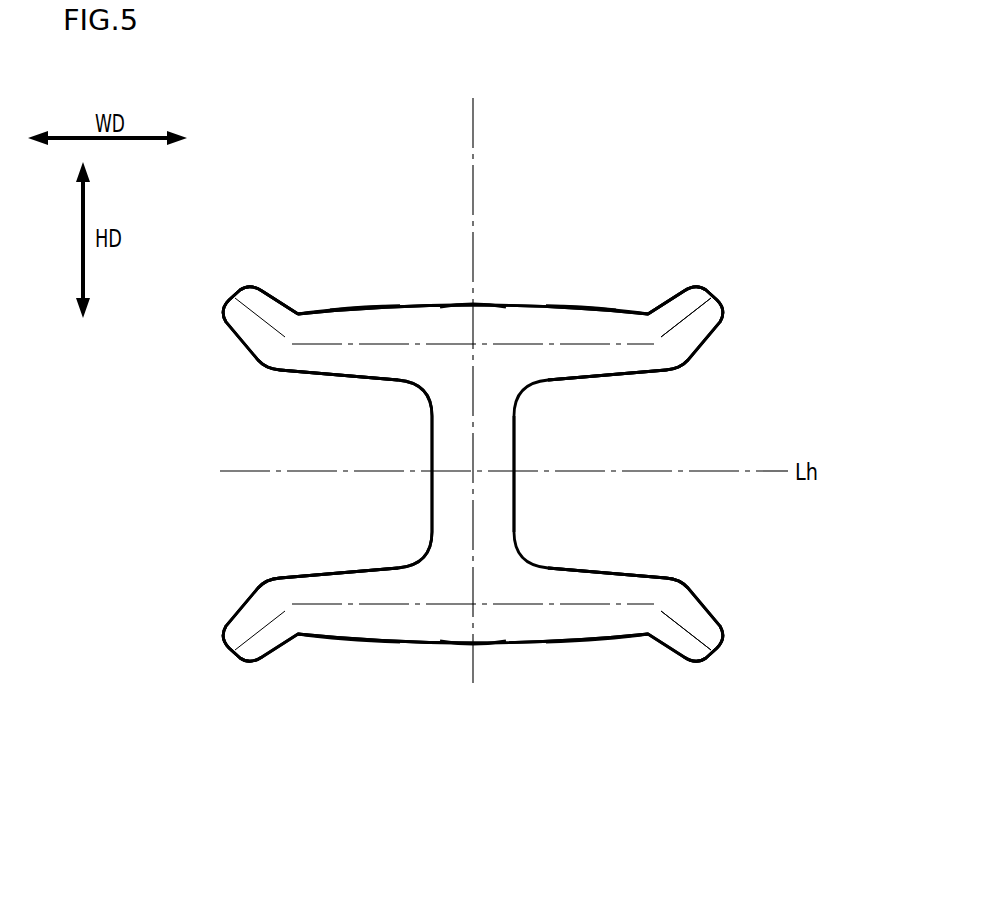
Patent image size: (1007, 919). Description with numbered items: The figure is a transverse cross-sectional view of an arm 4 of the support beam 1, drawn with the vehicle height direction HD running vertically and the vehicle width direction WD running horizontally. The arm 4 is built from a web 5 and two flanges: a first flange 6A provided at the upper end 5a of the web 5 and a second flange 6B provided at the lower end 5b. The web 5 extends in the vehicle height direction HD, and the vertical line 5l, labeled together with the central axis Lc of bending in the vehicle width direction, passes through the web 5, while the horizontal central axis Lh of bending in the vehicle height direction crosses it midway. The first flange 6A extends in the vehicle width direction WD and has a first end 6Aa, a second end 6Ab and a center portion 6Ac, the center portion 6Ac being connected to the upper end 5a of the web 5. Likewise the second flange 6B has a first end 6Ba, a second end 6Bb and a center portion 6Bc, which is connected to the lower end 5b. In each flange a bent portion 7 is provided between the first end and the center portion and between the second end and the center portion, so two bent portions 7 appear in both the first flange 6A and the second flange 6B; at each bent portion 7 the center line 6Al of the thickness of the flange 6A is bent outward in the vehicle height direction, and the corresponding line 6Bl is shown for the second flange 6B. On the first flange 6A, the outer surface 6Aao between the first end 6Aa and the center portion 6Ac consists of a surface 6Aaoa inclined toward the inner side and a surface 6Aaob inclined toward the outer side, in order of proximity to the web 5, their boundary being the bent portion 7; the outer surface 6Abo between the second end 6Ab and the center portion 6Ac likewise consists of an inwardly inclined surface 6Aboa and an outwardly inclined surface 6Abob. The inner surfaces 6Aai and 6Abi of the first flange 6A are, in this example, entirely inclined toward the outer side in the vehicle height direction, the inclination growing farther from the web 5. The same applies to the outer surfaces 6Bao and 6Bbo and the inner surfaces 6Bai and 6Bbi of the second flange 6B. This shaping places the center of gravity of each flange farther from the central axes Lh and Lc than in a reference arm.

The support beam 1 is at (164, 80).
The arm 4 is at (764, 264).
The web 5 is at (421, 460).
The upper end 5a is at (437, 397).
The lower end 5b is at (437, 563).
The web center line 5l is at (483, 373).
The first flange 6A is at (740, 325).
The first end 6Aa is at (703, 289).
The second end 6Ab is at (238, 288).
The center portion 6Ac is at (478, 308).
The outer surface 6Aao is at (667, 167).
The surface inclined toward the inner side 6Aaoa is at (587, 312).
The surface inclined toward the outer side 6Aaob is at (668, 298).
The outer surface 6Abo is at (433, 167).
The surface inclined toward the inner side 6Aboa is at (358, 312).
The surface inclined toward the outer side 6Abob is at (282, 300).
The inner surface 6Aai is at (609, 378).
The inner surface 6Abi is at (337, 378).
The center line of the thickness of the flange 6Al is at (708, 340).
The second flange 6B is at (740, 634).
The first end 6Ba is at (708, 658).
The second end 6Bb is at (237, 658).
The center portion 6Bc is at (477, 644).
The outer surface 6Bao is at (617, 637).
The outer surface 6Bbo is at (330, 637).
The inner surface 6Bai is at (609, 568).
The inner surface 6Bbi is at (337, 568).
The lower flange bend line 6Bl is at (712, 610).
The bent portion 7 is at (677, 582).